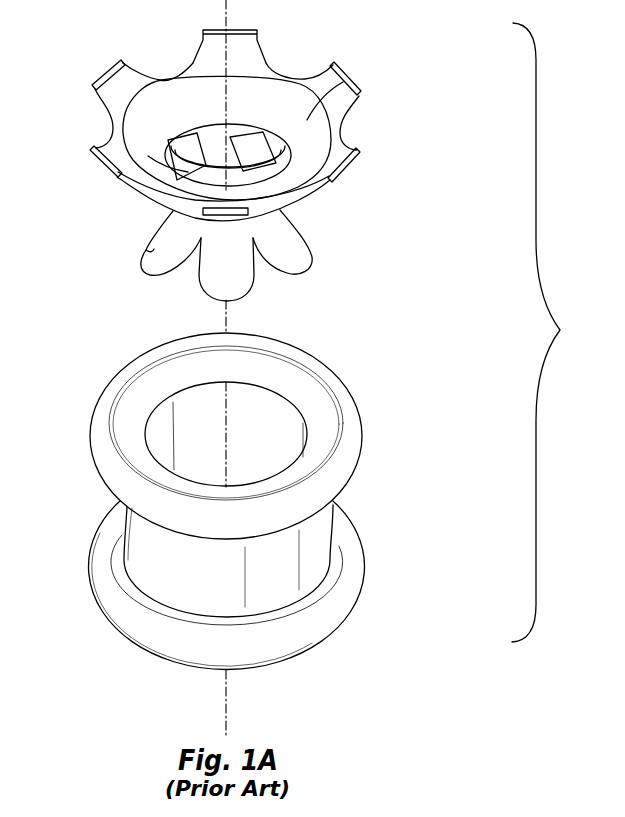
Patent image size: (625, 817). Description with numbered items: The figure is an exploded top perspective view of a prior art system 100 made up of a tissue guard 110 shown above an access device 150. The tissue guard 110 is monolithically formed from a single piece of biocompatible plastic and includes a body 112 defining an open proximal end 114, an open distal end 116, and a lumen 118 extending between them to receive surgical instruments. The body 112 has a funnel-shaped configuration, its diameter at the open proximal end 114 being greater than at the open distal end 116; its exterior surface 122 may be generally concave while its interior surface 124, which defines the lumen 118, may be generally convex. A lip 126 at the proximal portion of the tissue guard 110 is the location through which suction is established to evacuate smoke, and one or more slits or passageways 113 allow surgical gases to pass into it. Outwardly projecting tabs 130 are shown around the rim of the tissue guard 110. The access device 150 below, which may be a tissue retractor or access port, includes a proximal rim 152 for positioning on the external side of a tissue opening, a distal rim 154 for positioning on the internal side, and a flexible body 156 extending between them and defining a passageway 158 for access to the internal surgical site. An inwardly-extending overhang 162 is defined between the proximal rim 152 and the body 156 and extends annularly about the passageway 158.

The prior art system 100 is at (551, 332).
The tissue guard 110 is at (432, 145).
The body 112 is at (282, 225).
The passageways 113 is at (258, 160).
The open proximal end 114 is at (329, 116).
The open distal end 116 is at (305, 273).
The lumen 118 is at (247, 120).
The exterior surface 122 is at (147, 248).
The interior surface 124 is at (157, 103).
The lip 126 is at (343, 78).
The tab 130 is at (140, 63).
The access device 150 is at (245, 501).
The proximal rim 152 is at (348, 397).
The distal rim 154 is at (348, 585).
The body 156 is at (313, 533).
The passageway 158 is at (270, 418).
The inwardly-extending overhang 162 is at (158, 420).